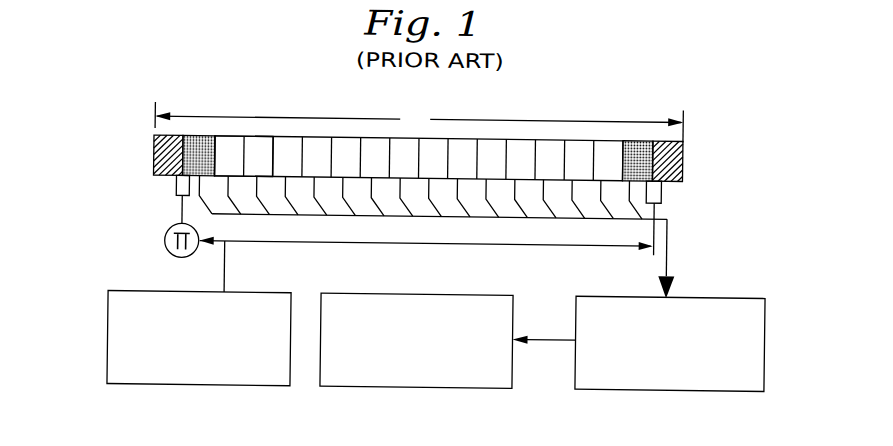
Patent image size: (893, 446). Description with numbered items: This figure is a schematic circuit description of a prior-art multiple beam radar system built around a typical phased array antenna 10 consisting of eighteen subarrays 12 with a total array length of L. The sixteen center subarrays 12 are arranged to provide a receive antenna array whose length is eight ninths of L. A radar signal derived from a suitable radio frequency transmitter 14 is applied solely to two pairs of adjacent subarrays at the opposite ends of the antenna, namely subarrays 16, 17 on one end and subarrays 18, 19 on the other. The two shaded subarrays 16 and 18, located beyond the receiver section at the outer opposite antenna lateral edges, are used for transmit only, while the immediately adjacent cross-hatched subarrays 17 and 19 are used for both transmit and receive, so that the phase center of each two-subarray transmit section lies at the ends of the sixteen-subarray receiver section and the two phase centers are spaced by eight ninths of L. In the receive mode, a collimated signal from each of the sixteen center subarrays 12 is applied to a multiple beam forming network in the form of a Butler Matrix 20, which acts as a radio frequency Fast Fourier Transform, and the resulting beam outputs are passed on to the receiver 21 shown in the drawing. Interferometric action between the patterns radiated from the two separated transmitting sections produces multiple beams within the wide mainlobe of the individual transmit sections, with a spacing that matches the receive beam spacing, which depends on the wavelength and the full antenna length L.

The phased array antenna 10 is at (562, 116).
The subarrays 12 is at (229, 140).
The radio frequency transmitter 14 is at (222, 293).
The shaded subarray 16 is at (155, 164).
The cross-hatched subarray 17 is at (200, 135).
The shaded subarray 18 is at (683, 173).
The cross-hatched subarray 19 is at (648, 135).
The Butler Matrix 20 is at (705, 293).
The 6 channel receiver 21 is at (408, 291).
The total array length L is at (419, 121).